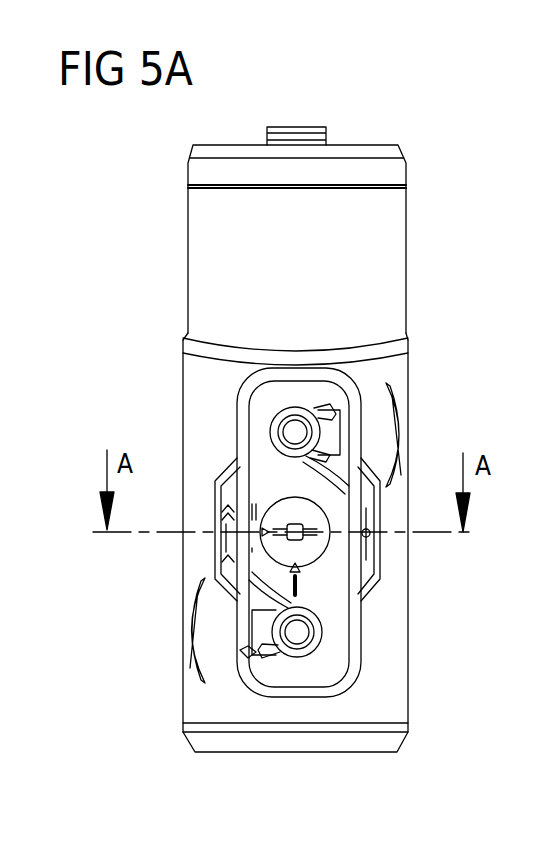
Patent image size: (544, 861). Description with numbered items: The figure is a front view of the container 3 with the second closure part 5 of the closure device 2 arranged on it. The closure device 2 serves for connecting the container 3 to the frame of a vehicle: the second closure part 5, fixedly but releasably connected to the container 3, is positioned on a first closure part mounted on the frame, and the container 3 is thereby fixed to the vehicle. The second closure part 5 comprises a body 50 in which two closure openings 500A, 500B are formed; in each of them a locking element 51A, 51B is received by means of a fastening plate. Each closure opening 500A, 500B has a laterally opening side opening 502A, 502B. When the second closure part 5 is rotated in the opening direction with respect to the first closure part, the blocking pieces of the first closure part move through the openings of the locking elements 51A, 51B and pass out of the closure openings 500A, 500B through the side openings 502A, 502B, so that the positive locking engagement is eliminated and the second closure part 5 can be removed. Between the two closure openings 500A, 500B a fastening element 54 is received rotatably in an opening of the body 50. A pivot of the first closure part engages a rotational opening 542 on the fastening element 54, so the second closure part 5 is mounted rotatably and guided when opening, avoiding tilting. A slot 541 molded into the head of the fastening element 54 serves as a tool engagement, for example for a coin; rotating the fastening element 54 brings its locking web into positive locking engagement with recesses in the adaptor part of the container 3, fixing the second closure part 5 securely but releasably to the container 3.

The closure device 2 is at (253, 695).
The container 3 is at (358, 755).
The second closure part 5 is at (308, 670).
The body 50 is at (335, 610).
The closure opening 500A is at (292, 430).
The closure opening 500B is at (317, 653).
The locking element 51A is at (323, 417).
The locking element 51B is at (285, 657).
The side opening 502A is at (352, 427).
The side opening 502B is at (247, 652).
The fastening element 54 is at (315, 552).
The slot 541 is at (290, 535).
The rotational opening 542 is at (240, 577).